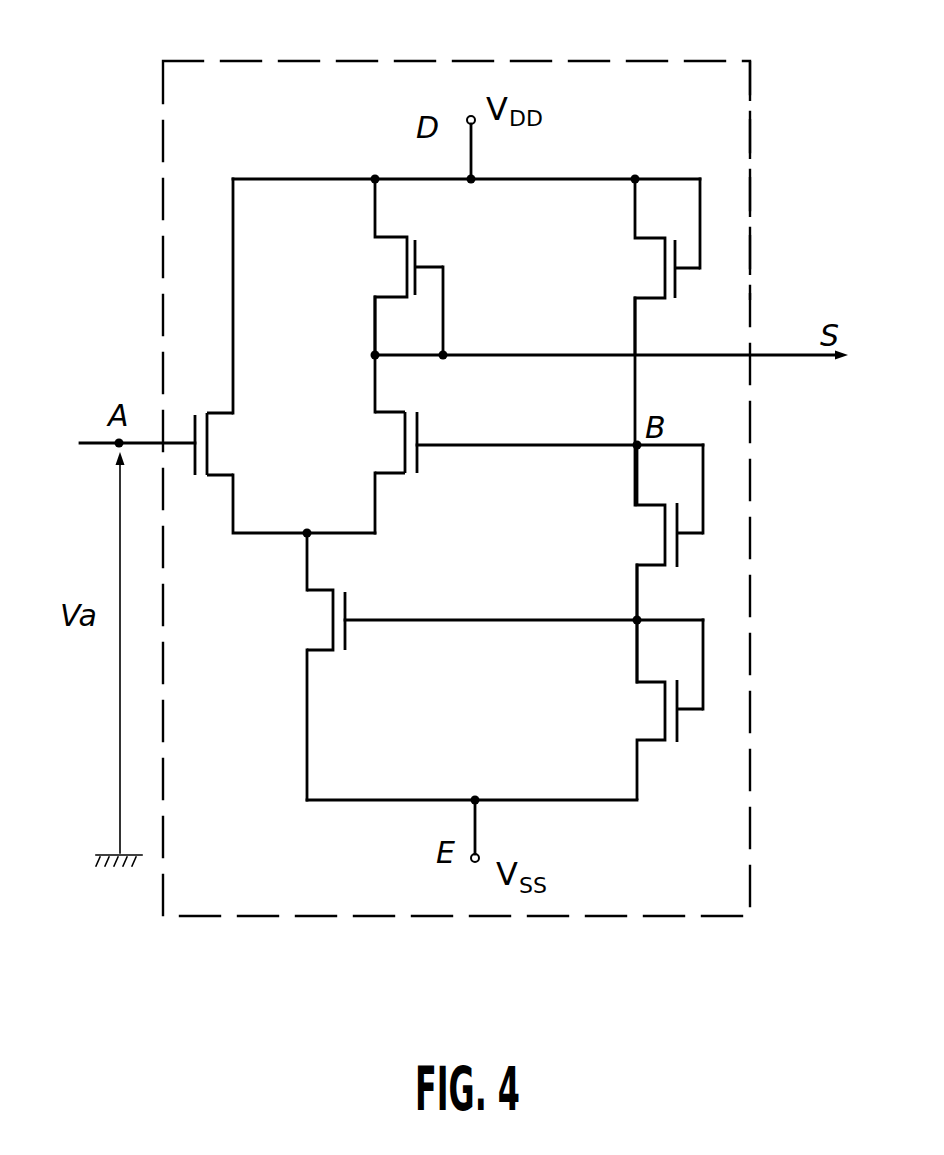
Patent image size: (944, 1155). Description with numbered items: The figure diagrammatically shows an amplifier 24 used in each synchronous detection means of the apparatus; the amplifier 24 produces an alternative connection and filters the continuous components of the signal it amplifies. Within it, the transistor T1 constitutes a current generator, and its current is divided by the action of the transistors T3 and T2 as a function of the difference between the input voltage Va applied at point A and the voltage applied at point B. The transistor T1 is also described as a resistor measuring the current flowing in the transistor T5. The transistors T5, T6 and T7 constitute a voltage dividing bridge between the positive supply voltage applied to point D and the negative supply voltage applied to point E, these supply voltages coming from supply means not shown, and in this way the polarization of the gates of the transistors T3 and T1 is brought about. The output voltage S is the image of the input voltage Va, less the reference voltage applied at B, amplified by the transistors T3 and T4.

The amplifier 24 is at (762, 112).
The transistor T1 is at (321, 622).
The transistor T2 is at (222, 440).
The transistor T3 is at (392, 450).
The transistor T4 is at (398, 271).
The transistor T5 is at (655, 272).
The transistor T6 is at (655, 540).
The transistor T7 is at (655, 716).